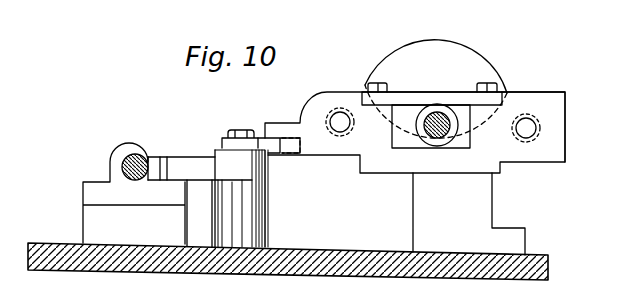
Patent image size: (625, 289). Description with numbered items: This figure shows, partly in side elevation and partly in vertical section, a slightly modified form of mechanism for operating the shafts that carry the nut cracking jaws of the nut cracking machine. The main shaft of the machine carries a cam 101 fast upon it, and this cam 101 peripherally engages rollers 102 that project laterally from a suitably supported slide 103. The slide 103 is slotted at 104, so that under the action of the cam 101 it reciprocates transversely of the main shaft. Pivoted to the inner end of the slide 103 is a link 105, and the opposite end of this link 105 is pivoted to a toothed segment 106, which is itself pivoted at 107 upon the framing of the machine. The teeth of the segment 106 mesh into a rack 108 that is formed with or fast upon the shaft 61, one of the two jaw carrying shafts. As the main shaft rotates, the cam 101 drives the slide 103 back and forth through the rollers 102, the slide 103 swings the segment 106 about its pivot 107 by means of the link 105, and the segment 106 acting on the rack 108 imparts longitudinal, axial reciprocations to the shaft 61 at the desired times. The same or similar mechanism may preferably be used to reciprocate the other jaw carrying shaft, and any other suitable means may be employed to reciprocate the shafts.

The shaft 61 is at (126, 162).
The cam 101 is at (468, 63).
The rollers 102 is at (340, 107).
The slide 103 is at (555, 133).
The slot 104 is at (408, 138).
The link 105 is at (273, 147).
The toothed segment 106 is at (182, 168).
The pivot 107 is at (237, 130).
The rack 108 is at (153, 158).